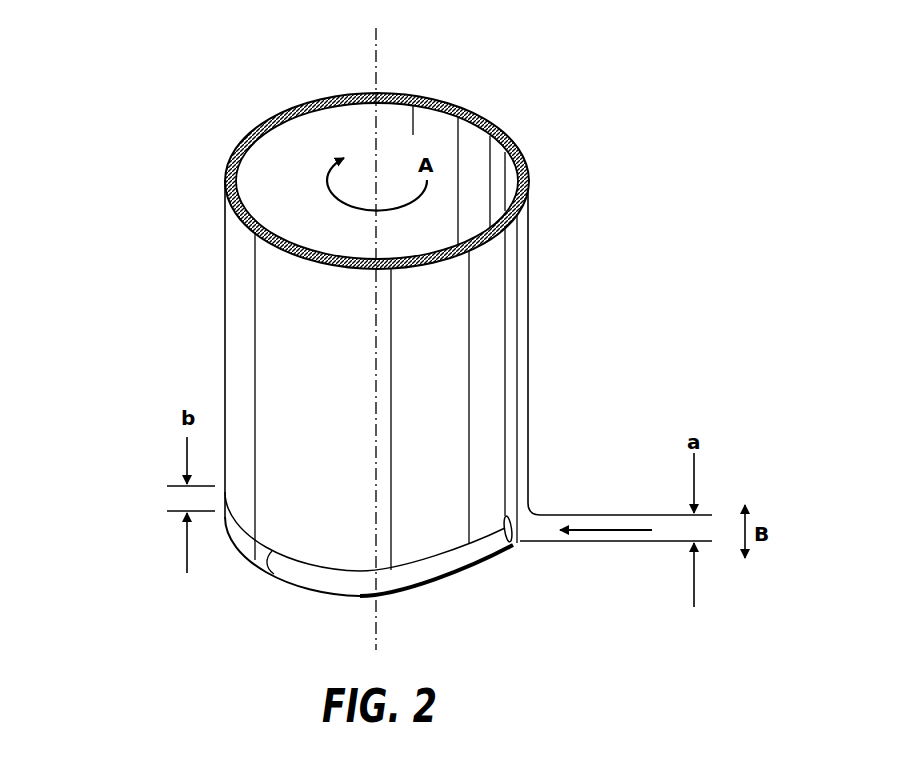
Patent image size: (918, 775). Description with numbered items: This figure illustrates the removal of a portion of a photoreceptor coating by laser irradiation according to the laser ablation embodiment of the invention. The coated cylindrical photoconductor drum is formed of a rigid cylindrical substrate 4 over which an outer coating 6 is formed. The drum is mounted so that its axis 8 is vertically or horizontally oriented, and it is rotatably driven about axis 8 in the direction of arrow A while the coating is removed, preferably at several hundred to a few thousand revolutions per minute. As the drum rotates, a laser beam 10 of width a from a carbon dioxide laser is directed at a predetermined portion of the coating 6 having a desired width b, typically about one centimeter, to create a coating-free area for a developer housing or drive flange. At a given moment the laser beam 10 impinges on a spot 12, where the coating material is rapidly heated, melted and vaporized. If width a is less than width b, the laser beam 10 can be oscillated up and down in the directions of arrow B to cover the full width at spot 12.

The rigid cylindrical substrate 4 is at (328, 575).
The outer coating 6 is at (242, 538).
The axis 8 is at (385, 63).
The laser beam 10 is at (607, 515).
The spot 12 is at (507, 547).